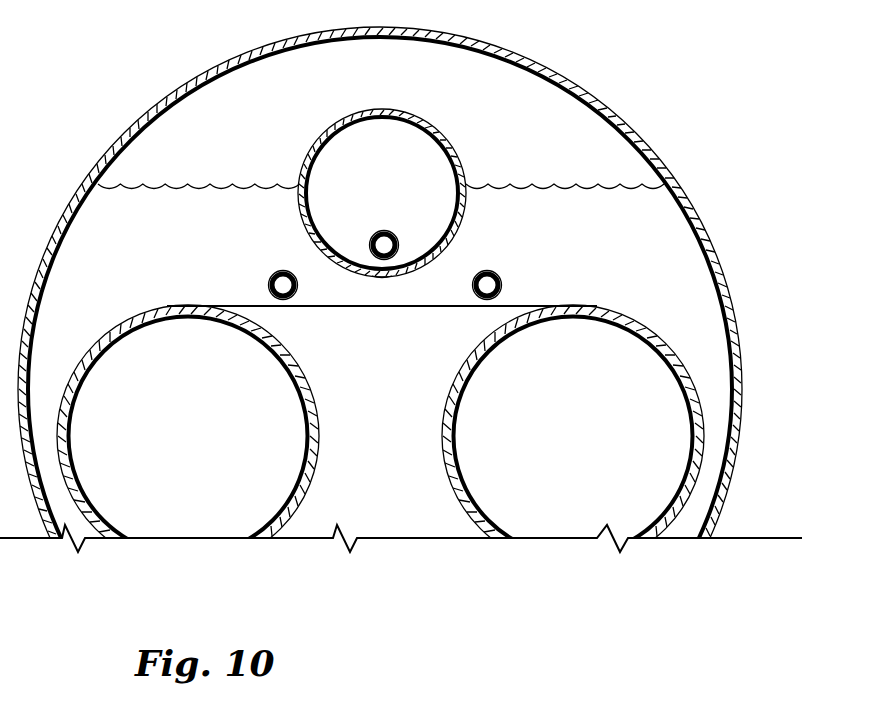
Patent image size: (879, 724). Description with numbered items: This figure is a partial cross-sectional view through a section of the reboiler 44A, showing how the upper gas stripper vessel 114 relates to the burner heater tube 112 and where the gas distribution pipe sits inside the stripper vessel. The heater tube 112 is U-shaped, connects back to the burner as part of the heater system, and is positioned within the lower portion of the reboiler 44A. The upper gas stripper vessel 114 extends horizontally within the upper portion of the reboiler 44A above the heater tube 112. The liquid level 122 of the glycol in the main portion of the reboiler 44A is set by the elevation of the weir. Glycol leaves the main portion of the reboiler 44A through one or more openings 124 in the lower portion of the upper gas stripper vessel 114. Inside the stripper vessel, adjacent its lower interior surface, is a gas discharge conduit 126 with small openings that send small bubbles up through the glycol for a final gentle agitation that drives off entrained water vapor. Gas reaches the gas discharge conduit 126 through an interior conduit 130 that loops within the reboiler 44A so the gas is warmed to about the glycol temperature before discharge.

The reboiler 44A is at (445, 28).
The heater tube 112 is at (168, 303).
The upper gas stripper vessel 114 is at (438, 132).
The liquid level 122 is at (563, 184).
The openings 124 is at (382, 279).
The gas discharge conduit 126 is at (374, 232).
The interior conduit 130 is at (480, 298).